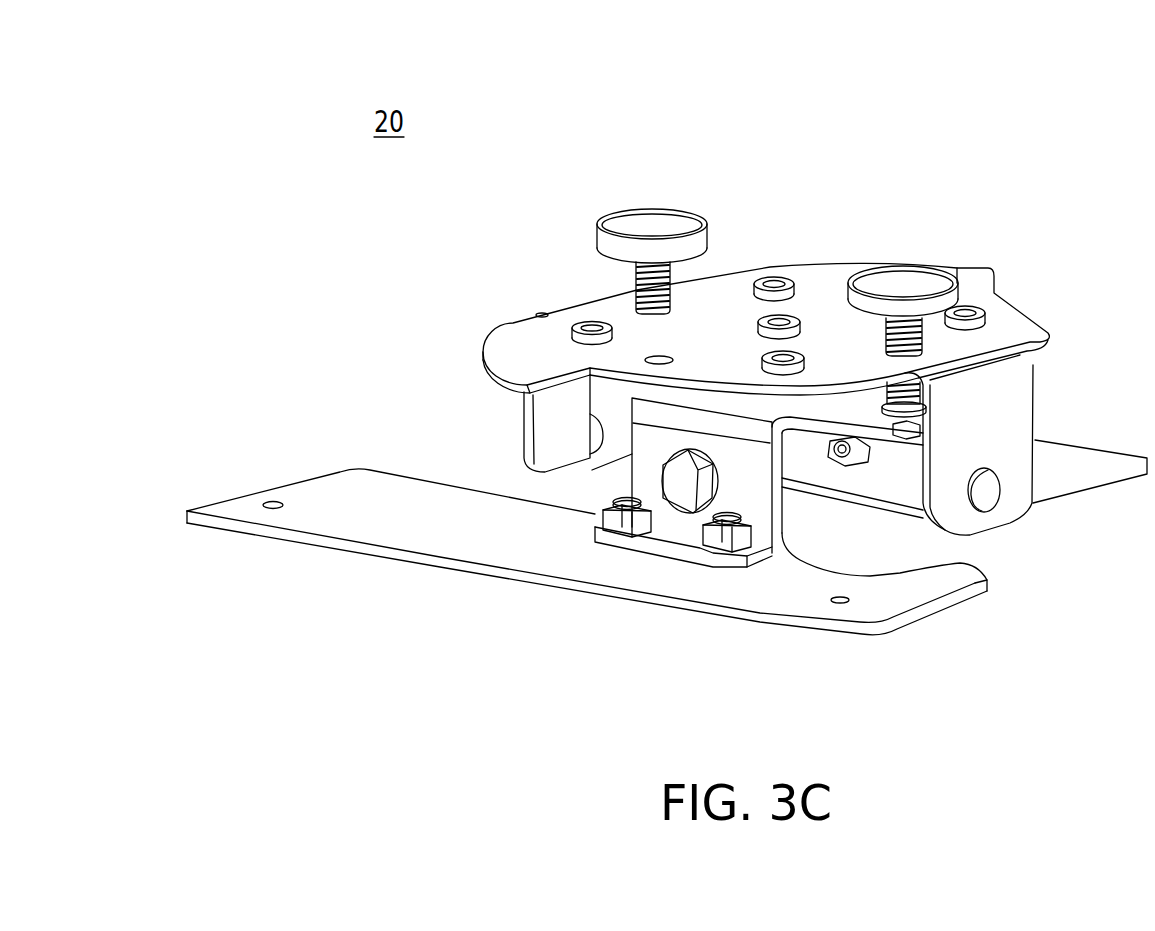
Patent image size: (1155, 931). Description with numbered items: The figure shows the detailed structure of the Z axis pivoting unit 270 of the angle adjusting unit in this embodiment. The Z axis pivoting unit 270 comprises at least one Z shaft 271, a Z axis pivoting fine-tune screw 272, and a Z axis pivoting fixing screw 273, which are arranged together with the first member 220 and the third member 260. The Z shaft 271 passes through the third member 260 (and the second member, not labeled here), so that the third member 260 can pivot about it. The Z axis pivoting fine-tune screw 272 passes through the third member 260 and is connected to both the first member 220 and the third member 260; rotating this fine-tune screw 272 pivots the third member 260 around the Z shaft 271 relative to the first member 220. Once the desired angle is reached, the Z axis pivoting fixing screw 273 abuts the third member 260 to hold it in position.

The first member 220 is at (1013, 327).
The third member 260 is at (857, 538).
The Z axis pivoting unit 270 is at (963, 131).
The Z shaft 271 is at (692, 488).
The Z axis pivoting fine-tune screw 272 is at (900, 268).
The Z axis pivoting fixing screw 273 is at (650, 214).